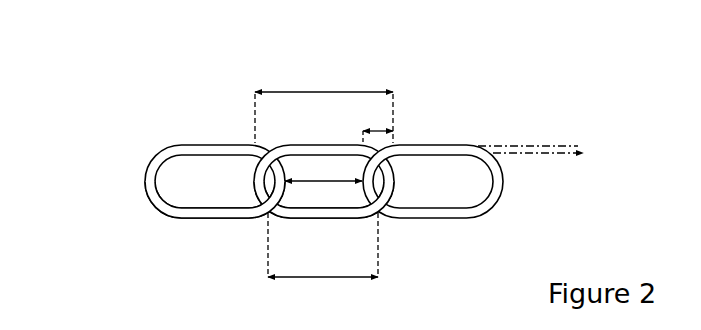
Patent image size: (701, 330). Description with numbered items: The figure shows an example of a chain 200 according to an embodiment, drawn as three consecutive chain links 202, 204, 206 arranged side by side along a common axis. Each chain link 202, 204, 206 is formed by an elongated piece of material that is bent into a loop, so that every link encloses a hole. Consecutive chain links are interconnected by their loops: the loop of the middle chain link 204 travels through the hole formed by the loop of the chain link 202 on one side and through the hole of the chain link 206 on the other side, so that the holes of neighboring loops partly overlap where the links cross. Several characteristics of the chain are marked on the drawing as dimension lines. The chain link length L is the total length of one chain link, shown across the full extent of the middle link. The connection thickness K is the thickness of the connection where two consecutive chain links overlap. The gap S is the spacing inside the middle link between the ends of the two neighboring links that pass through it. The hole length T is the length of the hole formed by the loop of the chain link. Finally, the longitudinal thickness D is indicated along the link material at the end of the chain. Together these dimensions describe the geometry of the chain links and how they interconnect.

The chain 200 is at (273, 203).
The chain link 202 is at (173, 219).
The chain link 204 is at (295, 219).
The chain link 206 is at (443, 219).
The chain link length L is at (349, 92).
The connection thickness of consecutive chain links K is at (384, 128).
The gap S is at (338, 181).
The hole length of the chain link T is at (365, 279).
The longitudinal thickness D is at (584, 152).